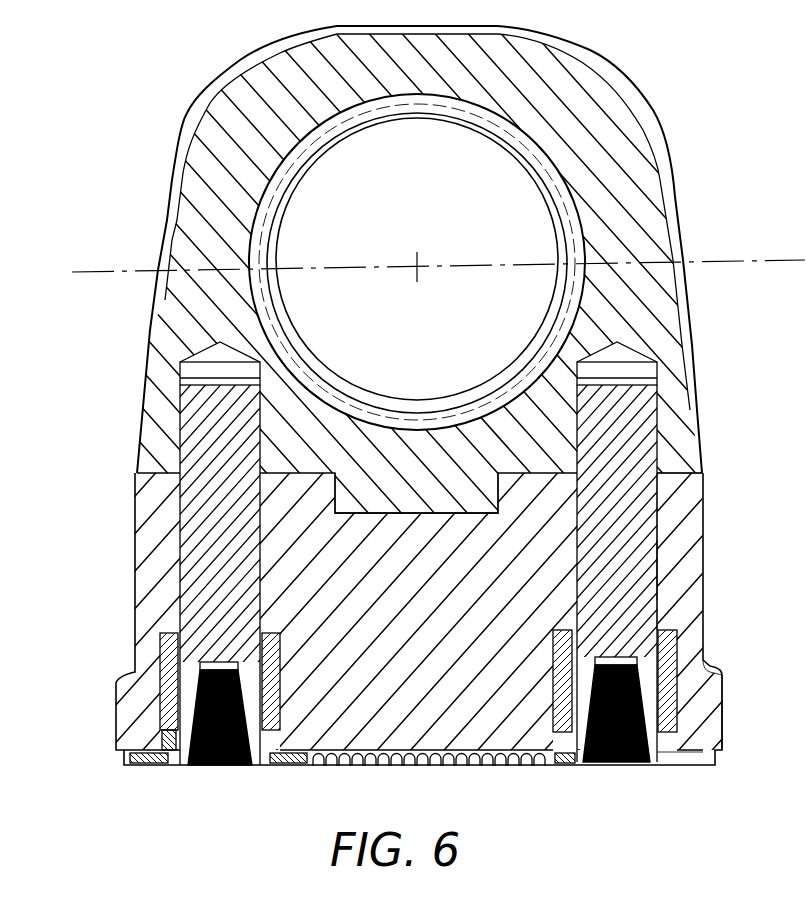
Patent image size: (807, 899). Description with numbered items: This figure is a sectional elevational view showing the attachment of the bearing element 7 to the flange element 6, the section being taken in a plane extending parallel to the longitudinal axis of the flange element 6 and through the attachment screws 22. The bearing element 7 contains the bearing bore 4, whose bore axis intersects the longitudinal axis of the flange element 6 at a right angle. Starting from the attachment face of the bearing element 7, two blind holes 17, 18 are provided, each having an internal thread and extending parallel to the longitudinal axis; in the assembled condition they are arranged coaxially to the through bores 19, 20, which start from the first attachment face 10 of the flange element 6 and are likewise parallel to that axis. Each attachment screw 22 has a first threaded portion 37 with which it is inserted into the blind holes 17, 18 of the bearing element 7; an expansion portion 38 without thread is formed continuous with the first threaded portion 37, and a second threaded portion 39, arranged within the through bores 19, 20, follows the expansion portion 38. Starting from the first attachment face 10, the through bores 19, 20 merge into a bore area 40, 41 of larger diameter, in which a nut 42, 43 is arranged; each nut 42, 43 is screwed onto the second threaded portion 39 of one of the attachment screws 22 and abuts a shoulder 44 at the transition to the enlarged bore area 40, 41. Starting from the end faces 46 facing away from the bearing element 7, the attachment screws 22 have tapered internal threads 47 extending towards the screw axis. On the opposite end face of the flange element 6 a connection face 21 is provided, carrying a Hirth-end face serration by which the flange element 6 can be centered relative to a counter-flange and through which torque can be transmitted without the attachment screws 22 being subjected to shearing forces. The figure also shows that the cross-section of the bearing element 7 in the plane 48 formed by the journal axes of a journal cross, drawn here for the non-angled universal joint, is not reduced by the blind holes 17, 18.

The bearing bore 4 is at (462, 128).
The flange element 6 is at (703, 480).
The bearing element 7 is at (640, 176).
The first attachment face 10 is at (312, 468).
The blind hole 17 is at (172, 352).
The blind hole 18 is at (655, 360).
The through bore 19 is at (182, 536).
The through bore 20 is at (665, 533).
The connection face 21 is at (322, 770).
The attachment screw 22 is at (640, 397).
The first threaded portion 37 is at (658, 430).
The expansion portion 38 is at (658, 555).
The second threaded portion 39 is at (722, 678).
The bore area 40 is at (170, 765).
The bore area 41 is at (676, 752).
The nut 42 is at (162, 720).
The nut 43 is at (690, 717).
The shoulder 44 is at (672, 628).
The end face 46 is at (600, 765).
The tapered internal thread 47 is at (625, 765).
The plane 48 is at (107, 272).